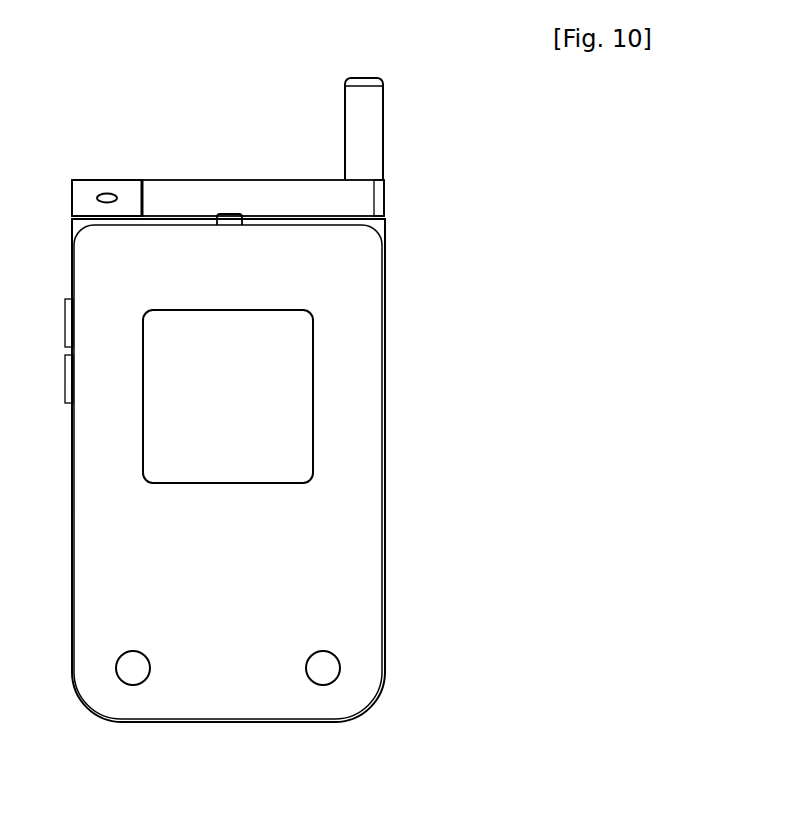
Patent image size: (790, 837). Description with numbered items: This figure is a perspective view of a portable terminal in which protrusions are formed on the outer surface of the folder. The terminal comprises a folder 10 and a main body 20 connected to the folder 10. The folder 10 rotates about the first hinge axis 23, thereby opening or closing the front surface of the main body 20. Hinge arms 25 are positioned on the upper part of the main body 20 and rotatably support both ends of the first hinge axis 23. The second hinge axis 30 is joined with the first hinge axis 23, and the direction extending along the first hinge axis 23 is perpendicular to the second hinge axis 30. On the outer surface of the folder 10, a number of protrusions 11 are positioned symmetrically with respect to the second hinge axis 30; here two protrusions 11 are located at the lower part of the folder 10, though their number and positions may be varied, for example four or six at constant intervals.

The folder 10 is at (372, 348).
The protrusions 11 is at (328, 663).
The main body 20 is at (382, 222).
The first hinge axis 23 is at (157, 187).
The hinge arms 25 is at (380, 200).
The second hinge axis 30 is at (227, 214).